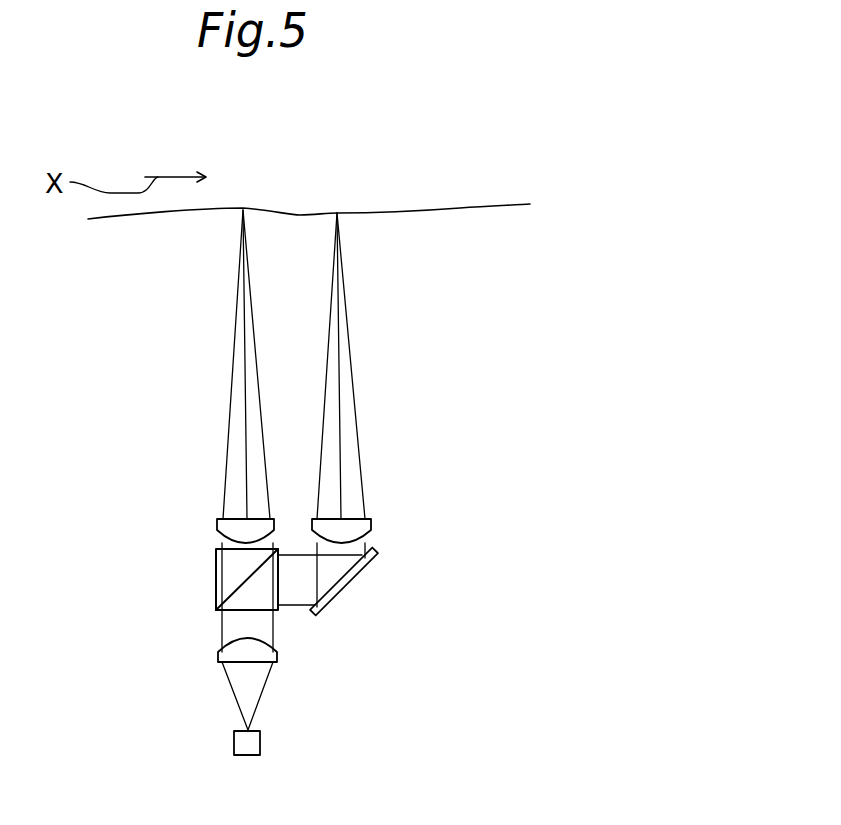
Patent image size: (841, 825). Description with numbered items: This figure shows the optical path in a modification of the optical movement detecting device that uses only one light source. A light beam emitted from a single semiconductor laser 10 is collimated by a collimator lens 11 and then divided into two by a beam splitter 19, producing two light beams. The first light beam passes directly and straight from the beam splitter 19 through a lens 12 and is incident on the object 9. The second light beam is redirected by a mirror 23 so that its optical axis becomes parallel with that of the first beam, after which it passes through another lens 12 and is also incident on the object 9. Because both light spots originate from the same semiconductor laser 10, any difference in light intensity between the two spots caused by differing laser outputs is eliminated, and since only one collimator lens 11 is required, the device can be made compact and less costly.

The object 9 is at (507, 203).
The semiconductor laser 10 is at (262, 745).
The collimator lens 11 is at (277, 651).
The lens 12 is at (216, 524).
The beam splitter 19 is at (216, 567).
The mirror 23 is at (372, 565).